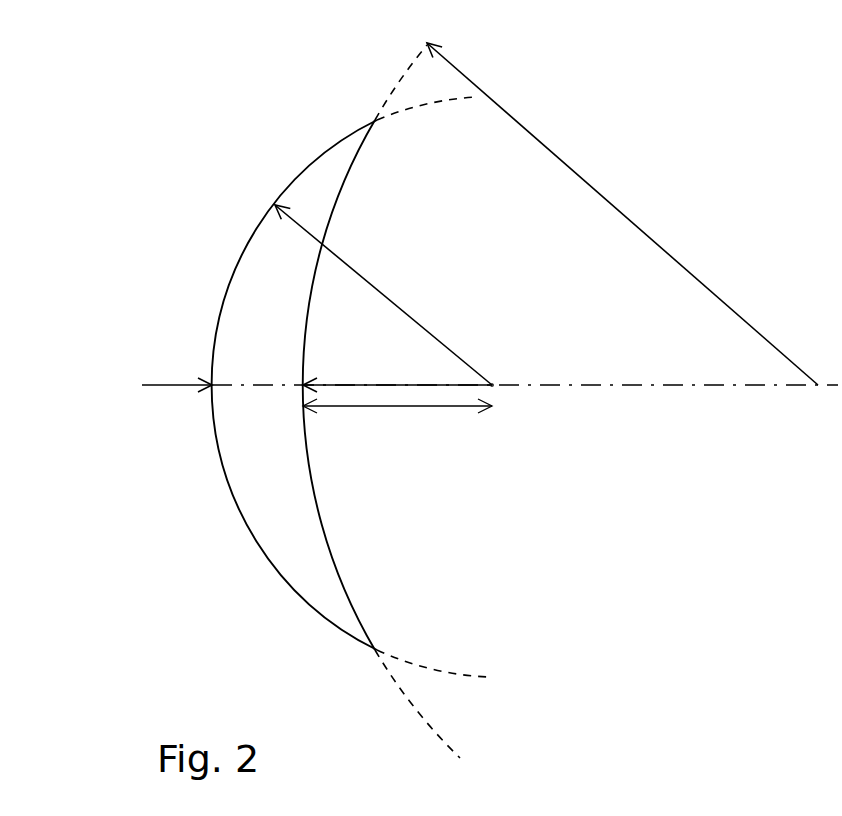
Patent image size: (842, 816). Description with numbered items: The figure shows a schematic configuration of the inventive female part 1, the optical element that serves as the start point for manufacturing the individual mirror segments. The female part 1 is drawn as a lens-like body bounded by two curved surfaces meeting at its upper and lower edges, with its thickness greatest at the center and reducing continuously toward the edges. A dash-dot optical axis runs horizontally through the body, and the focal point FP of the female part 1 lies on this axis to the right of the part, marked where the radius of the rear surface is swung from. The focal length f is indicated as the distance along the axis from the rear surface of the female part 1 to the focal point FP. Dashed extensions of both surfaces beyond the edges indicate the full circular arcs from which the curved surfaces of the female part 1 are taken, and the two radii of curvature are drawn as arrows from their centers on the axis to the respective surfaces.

The female part 1 is at (313, 187).
The focal point FP is at (495, 370).
The focal length f is at (397, 425).